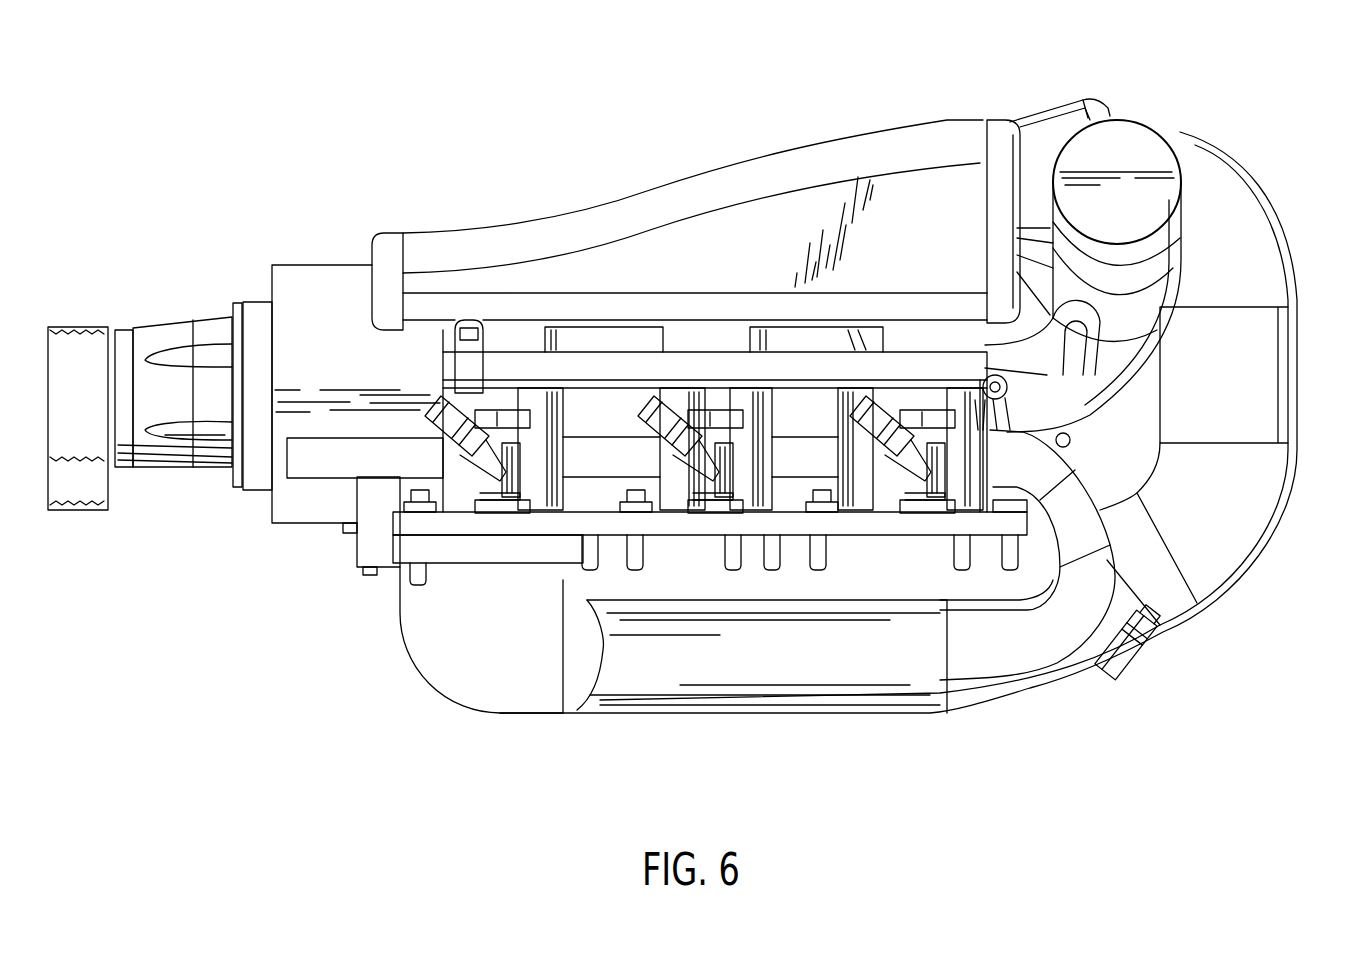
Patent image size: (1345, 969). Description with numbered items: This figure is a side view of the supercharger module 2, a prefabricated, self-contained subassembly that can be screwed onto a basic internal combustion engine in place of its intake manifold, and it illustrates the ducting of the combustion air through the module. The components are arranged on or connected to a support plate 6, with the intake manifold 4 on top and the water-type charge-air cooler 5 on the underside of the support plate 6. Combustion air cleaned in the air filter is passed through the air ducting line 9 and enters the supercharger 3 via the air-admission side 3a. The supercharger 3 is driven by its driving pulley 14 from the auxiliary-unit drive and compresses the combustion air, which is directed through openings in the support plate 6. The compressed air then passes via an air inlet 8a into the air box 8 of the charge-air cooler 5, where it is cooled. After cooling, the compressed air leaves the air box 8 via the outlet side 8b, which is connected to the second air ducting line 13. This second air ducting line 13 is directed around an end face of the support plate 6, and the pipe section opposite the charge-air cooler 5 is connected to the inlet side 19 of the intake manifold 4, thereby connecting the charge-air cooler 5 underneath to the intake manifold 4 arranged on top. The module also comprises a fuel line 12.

The supercharger module 2 is at (358, 208).
The supercharger 3 is at (343, 369).
The air-admission side 3a is at (980, 343).
The intake manifold 4 is at (843, 158).
The charge-air cooler 5 is at (743, 693).
The support plate 6 is at (712, 545).
The air box 8 is at (520, 693).
The air inlet 8a is at (473, 567).
The outlet side 8b is at (1093, 653).
The air ducting line 9 is at (1147, 155).
The fuel line 12 is at (683, 372).
The second air ducting line 13 is at (1238, 382).
The driving pulley 14 is at (91, 396).
The inlet side 19 is at (1113, 105).